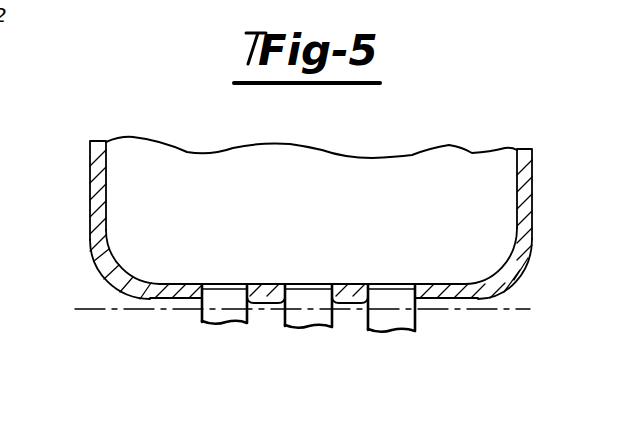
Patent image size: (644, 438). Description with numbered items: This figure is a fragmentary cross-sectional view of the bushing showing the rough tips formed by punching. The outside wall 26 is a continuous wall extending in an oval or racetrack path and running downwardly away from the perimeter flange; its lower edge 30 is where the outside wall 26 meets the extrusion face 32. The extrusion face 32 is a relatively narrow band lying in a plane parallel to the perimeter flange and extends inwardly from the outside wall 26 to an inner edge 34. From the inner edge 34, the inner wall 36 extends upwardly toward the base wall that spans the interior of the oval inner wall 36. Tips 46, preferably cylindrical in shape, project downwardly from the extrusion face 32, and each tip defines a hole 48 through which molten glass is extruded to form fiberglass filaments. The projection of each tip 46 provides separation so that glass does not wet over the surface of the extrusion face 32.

The outside wall 26 is at (525, 221).
The lower edge 30 is at (512, 290).
The extrusion face 32 is at (173, 301).
The inner edge 34 is at (99, 270).
The inner wall 36 is at (90, 191).
The tips 46 is at (200, 302).
The hole 48 is at (233, 306).